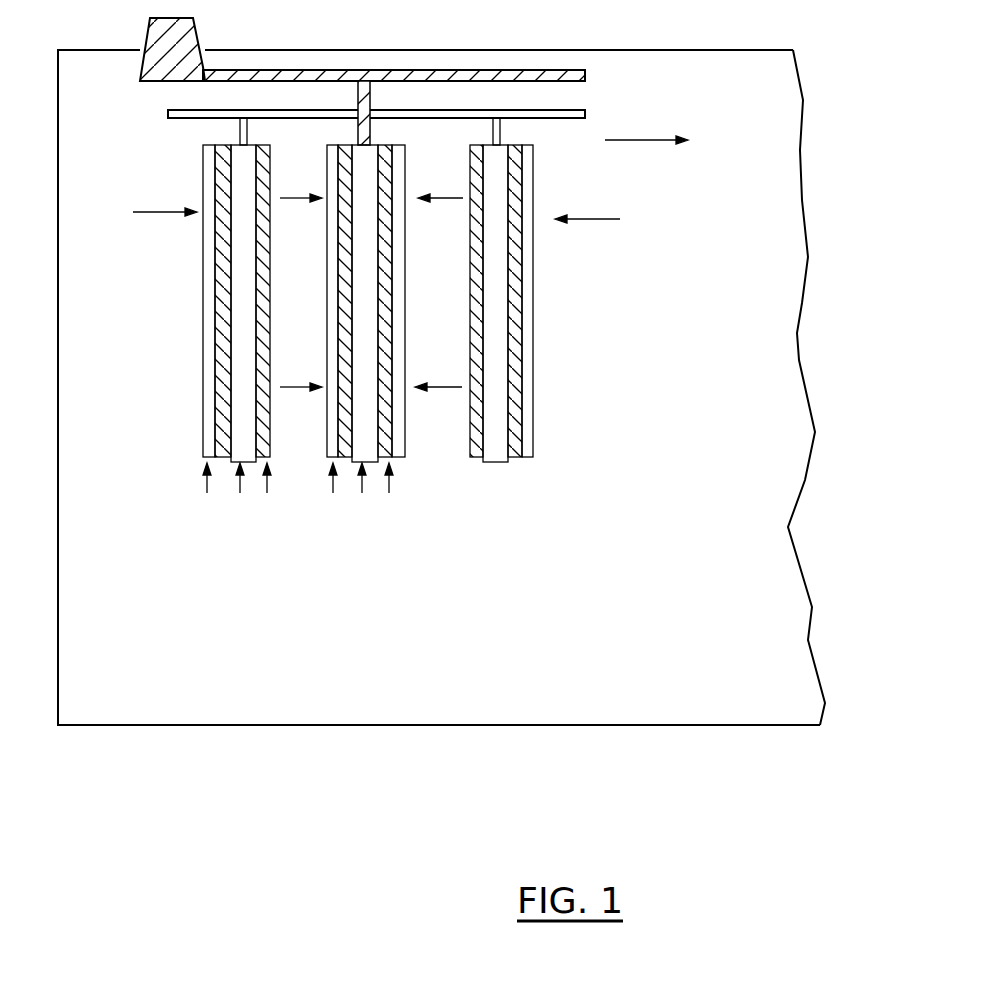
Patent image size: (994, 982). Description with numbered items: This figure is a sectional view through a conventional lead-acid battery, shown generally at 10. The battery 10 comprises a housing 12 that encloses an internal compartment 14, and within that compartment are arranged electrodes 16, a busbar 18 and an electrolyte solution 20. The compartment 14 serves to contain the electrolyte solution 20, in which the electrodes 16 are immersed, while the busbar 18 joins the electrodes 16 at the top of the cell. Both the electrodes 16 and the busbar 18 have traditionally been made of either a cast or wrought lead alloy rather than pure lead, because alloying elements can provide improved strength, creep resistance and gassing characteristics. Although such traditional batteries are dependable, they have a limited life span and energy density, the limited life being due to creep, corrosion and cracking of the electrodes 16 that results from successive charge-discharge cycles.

The lead-acid battery 10 is at (461, 425).
The housing 12 is at (461, 435).
The internal compartment 14 is at (737, 334).
The electrodes 16 is at (243, 315).
The busbar 18 is at (440, 113).
The electrolyte solution 20 is at (560, 622).